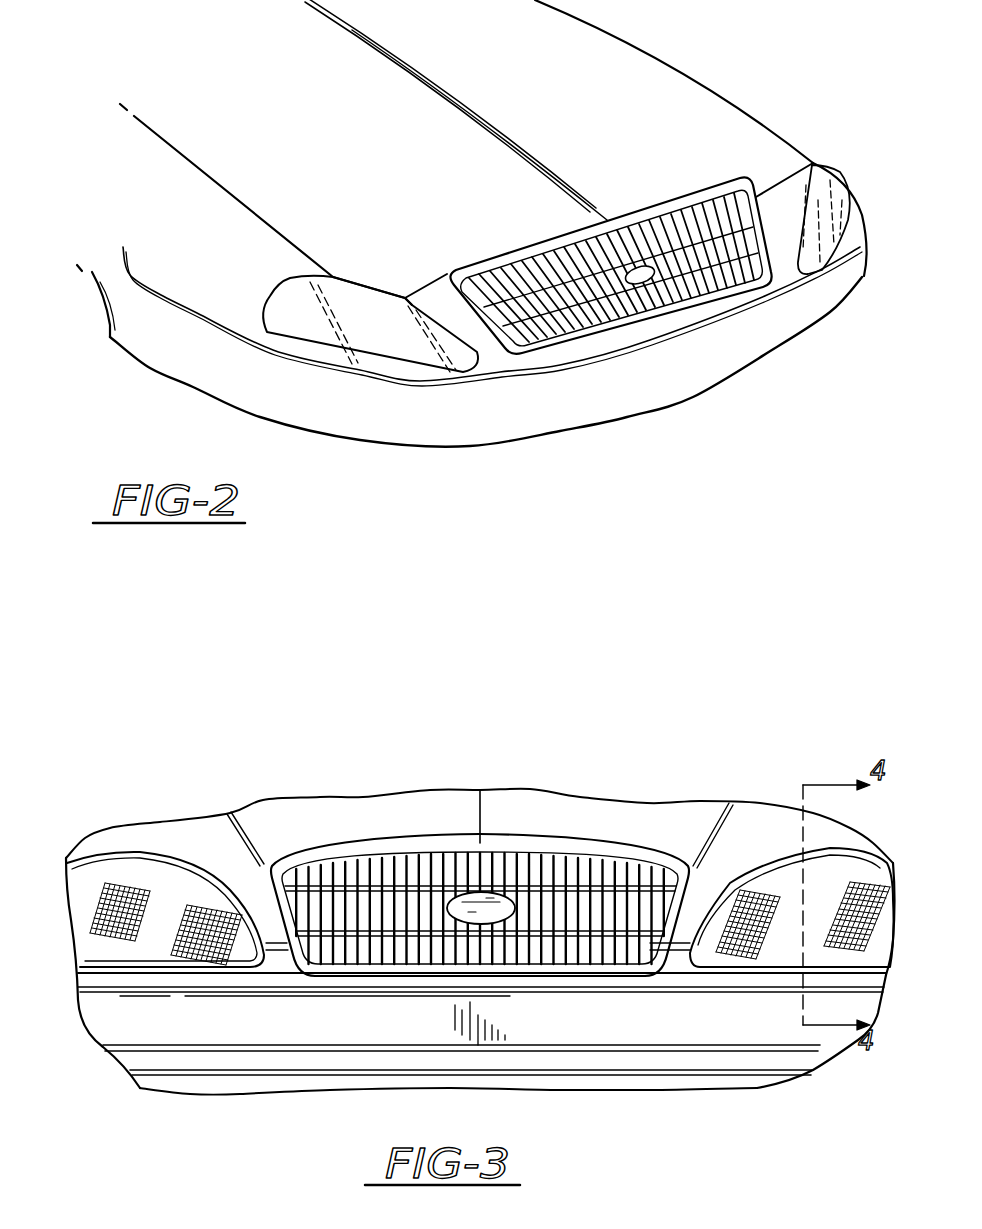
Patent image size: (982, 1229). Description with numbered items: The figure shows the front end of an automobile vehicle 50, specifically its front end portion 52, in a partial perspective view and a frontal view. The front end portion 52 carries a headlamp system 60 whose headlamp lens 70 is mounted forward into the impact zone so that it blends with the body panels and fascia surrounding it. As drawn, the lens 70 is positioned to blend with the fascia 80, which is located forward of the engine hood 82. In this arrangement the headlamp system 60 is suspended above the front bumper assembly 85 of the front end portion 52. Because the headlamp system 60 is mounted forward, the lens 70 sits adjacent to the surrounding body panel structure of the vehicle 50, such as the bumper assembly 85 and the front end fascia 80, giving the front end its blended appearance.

In FIG. 2, the automobile vehicle 50 is at (80, 243).
In FIG. 2, the front end portion 52 is at (833, 163).
In FIG. 3, the front end portion 52 is at (428, 790).
In FIG. 2, the headlamp system 60 is at (248, 357).
In FIG. 3, the headlamp system 60 is at (52, 874).
In FIG. 2, the headlamp lens 70 is at (395, 344).
In FIG. 3, the headlamp lens 70 is at (190, 910).
In FIG. 2, the fascia 80 is at (457, 313).
In FIG. 3, the engine hood 82 is at (513, 806).
In FIG. 2, the front bumper assembly 85 is at (765, 365).
In FIG. 3, the front bumper assembly 85 is at (674, 1045).